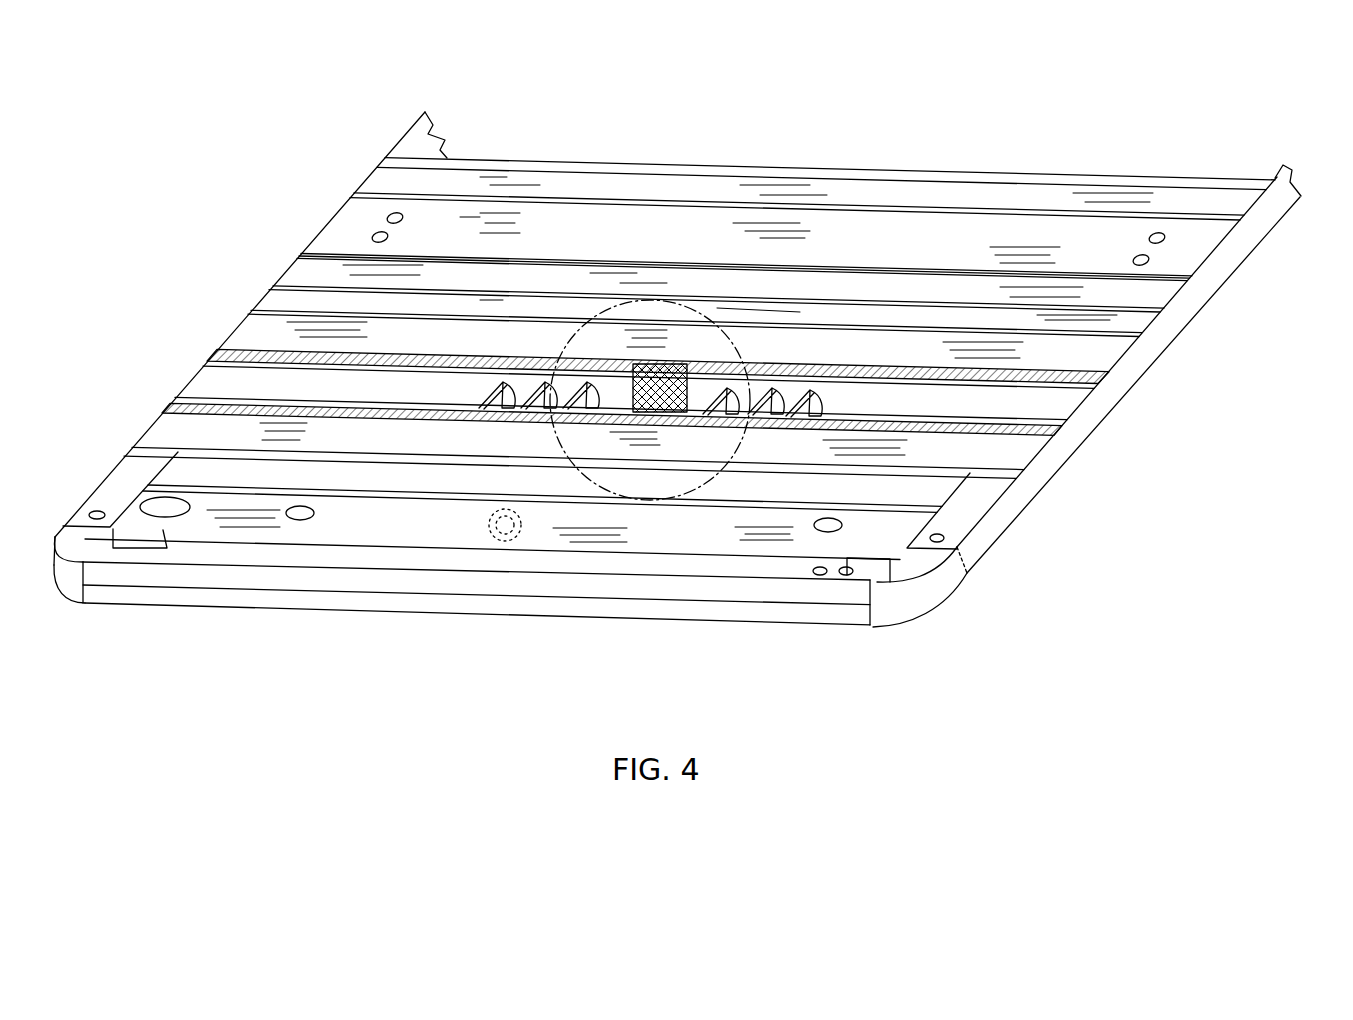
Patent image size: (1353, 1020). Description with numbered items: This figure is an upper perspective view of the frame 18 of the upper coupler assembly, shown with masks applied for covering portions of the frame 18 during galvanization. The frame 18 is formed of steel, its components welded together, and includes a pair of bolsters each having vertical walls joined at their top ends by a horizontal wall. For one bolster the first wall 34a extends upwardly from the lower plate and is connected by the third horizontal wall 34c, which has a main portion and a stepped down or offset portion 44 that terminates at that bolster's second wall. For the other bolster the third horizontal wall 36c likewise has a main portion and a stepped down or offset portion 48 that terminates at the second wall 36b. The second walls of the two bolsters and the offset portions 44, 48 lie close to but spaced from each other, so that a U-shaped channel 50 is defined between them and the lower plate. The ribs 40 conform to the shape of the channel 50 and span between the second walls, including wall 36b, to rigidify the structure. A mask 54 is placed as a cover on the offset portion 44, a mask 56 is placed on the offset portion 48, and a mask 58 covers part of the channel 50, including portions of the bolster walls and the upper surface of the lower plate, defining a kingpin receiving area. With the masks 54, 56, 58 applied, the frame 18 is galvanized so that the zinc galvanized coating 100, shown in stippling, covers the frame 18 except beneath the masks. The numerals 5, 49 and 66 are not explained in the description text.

The section line / detail circle 5 is at (613, 310).
The frame 18 is at (1213, 270).
The third horizontal wall 36c is at (1040, 353).
The second wall 36b is at (1053, 400).
The first wall 34a is at (870, 490).
The third horizontal wall 34c is at (990, 450).
The ribs 40 is at (790, 395).
The stepped down or offset portion 44 is at (180, 402).
The stepped down or offset portion 48 is at (223, 347).
The teeth 49 is at (545, 380).
The U-shaped channel 50 is at (232, 378).
The mask 54 is at (1025, 438).
The mask 56 is at (1100, 380).
The mask 58 is at (687, 368).
The clip 66 is at (851, 570).
The galvanized coating 100 is at (505, 542).